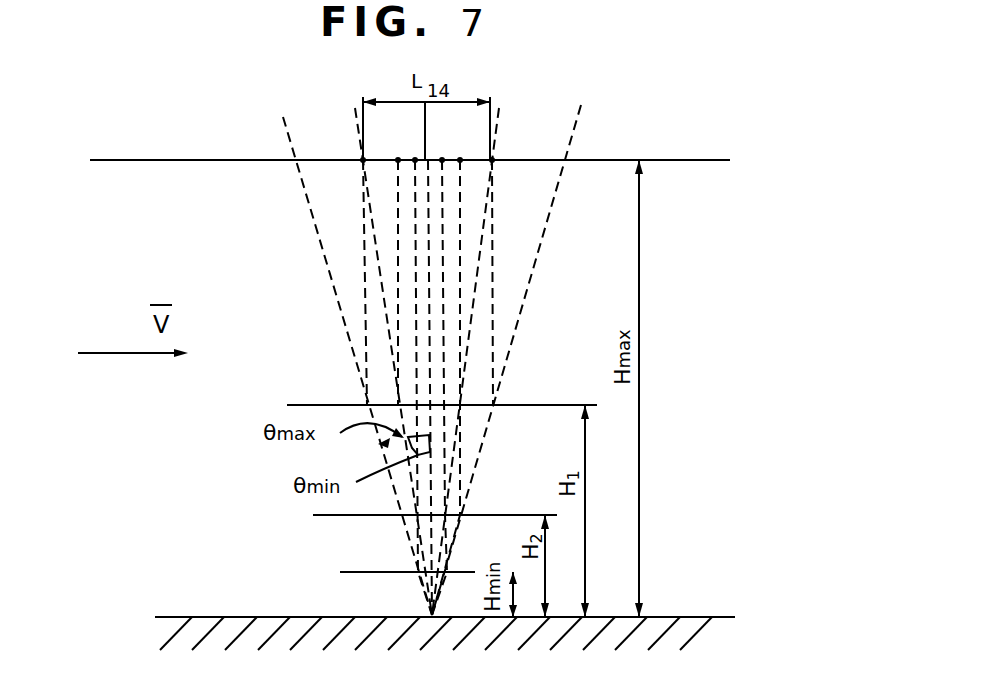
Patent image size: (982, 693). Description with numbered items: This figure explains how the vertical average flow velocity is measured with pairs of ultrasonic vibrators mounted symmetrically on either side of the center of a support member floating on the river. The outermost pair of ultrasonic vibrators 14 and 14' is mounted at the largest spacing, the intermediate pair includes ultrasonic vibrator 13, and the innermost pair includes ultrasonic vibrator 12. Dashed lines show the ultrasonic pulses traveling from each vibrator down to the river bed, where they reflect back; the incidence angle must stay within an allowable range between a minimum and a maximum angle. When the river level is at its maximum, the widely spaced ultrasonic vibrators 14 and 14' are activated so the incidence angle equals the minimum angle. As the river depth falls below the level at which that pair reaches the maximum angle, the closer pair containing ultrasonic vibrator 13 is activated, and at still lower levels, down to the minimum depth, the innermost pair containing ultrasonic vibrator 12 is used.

The ultrasonic vibrator 12 is at (427, 371).
The ultrasonic vibrator 13 is at (428, 371).
The ultrasonic vibrator 14 is at (357, 361).
The ultrasonic vibrator 14' is at (506, 360).